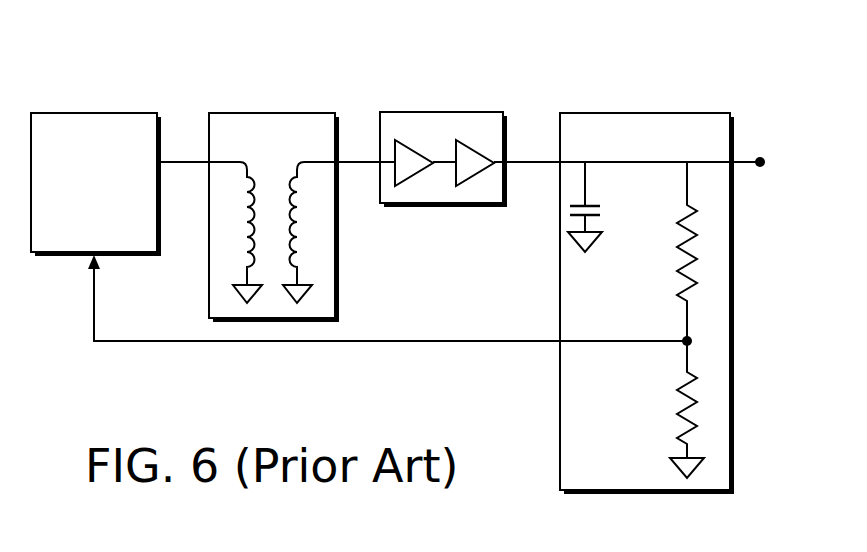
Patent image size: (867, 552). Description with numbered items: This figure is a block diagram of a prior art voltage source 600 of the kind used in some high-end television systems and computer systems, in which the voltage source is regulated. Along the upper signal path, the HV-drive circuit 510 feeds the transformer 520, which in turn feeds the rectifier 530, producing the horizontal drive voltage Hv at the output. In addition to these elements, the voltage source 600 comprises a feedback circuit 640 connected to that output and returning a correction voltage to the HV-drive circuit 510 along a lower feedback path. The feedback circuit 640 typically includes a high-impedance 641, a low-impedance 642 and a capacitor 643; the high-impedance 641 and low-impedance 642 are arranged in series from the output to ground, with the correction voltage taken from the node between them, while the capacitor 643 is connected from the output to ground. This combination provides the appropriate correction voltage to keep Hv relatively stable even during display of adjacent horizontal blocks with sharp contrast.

The HV-drive circuit 510 is at (76, 218).
The transformer 520 is at (253, 145).
The rectifier 530 is at (411, 141).
The voltage source 600 is at (490, 78).
The feedback circuit 640 is at (664, 142).
The high-impedance 641 is at (678, 293).
The low-impedance 642 is at (678, 401).
The capacitor 643 is at (590, 203).